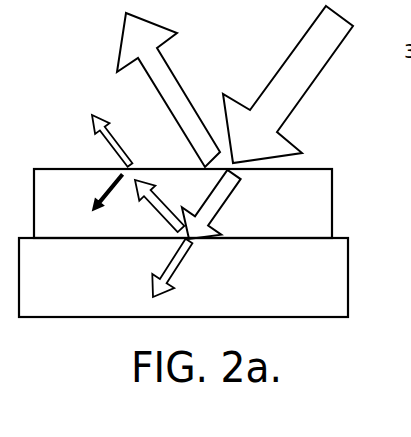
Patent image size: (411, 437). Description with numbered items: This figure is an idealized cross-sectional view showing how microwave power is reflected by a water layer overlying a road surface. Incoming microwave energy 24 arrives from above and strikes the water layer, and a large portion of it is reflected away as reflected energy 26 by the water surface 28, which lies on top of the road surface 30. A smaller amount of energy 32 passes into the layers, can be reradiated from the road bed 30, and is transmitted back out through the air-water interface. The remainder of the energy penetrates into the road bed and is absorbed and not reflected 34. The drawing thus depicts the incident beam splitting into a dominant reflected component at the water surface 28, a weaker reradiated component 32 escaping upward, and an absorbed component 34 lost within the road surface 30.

The incoming microwave energy 24 is at (316, 20).
The reflected energy 26 is at (125, 32).
The water surface 28 is at (332, 201).
The road surface 30 is at (348, 278).
The reradiated energy 32 is at (90, 115).
The absorbed energy 34 is at (168, 258).